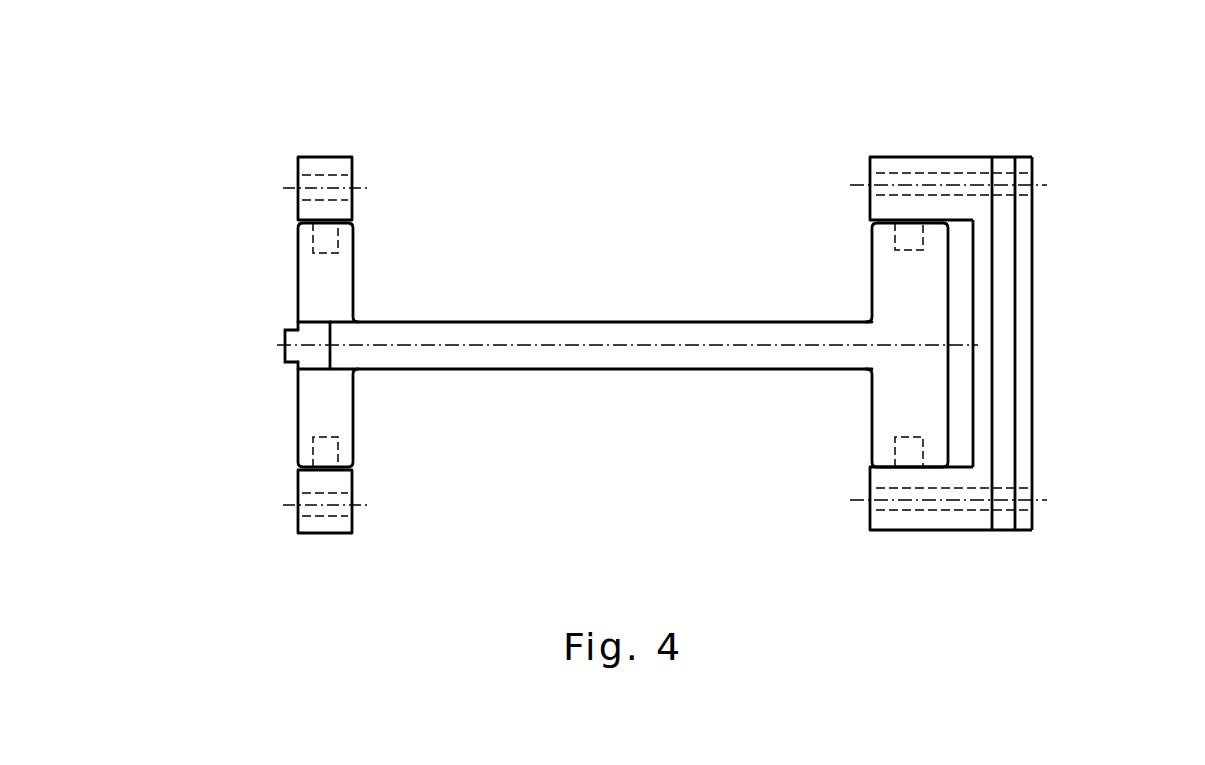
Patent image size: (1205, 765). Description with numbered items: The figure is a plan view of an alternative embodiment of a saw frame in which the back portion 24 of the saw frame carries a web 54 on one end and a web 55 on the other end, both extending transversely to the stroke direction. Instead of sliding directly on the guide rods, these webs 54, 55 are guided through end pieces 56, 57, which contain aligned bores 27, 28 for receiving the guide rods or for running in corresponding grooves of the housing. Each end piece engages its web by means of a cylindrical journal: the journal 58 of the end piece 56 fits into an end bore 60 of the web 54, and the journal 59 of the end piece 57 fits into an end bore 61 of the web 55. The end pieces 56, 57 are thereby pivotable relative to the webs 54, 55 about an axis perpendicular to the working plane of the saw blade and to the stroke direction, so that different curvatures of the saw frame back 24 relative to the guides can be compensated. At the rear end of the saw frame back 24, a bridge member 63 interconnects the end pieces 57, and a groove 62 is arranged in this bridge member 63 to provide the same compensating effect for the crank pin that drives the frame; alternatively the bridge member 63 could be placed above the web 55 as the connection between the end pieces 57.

The back portion of saw frame 24 is at (578, 337).
The bore 27 is at (333, 193).
The bore 28 is at (882, 183).
The web 54 is at (333, 270).
The web 55 is at (883, 258).
The end piece 56 is at (323, 172).
The end piece 57 is at (942, 163).
The cylindrical journal 58 is at (321, 238).
The cylindrical journal 59 is at (913, 239).
The end bore 60 is at (313, 255).
The end bore 61 is at (919, 251).
The groove 62 is at (1003, 308).
The bridge member 63 is at (1025, 366).